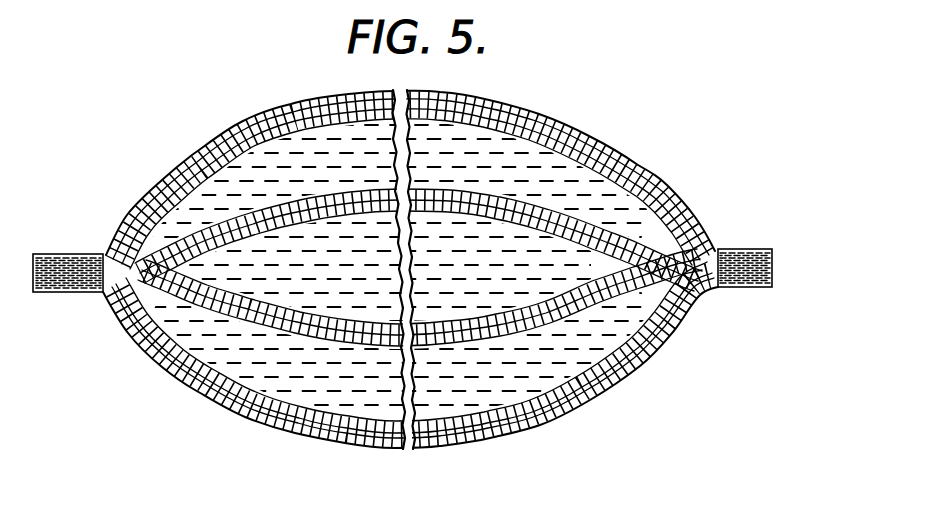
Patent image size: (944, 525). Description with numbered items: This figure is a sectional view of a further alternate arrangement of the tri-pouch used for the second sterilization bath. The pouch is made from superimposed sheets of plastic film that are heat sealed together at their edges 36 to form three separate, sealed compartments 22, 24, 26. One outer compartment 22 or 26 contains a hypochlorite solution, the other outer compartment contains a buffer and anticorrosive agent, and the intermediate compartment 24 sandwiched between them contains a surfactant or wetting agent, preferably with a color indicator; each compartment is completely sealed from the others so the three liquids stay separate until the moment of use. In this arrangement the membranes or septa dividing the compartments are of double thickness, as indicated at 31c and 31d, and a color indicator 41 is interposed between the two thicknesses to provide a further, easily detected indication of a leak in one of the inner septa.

The outer compartment 22 is at (322, 143).
The intermediate compartment 24 is at (567, 280).
The outer compartment 26 is at (370, 392).
The double-thickness septum layer 31c is at (597, 142).
The double-thickness septum layer 31d is at (527, 142).
The heat-sealed edges 36 is at (68, 254).
The color indicator 41 is at (627, 166).